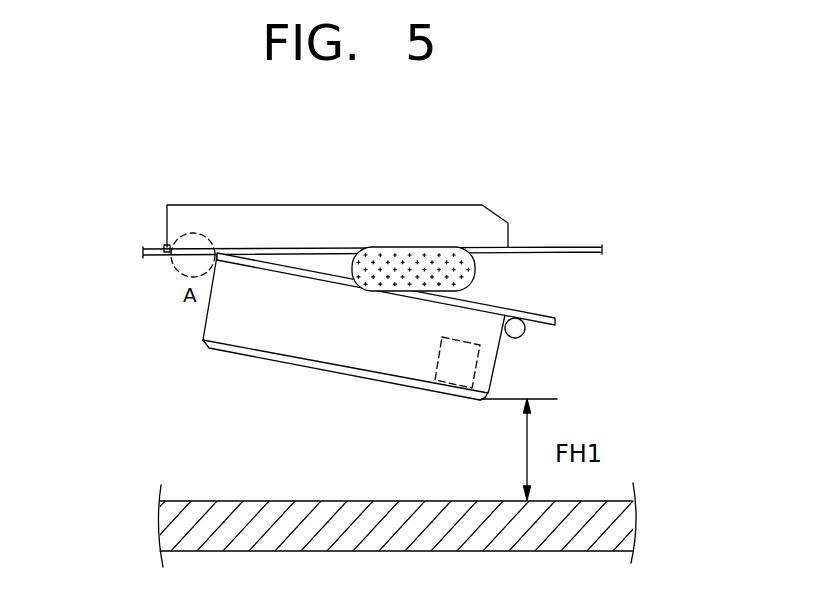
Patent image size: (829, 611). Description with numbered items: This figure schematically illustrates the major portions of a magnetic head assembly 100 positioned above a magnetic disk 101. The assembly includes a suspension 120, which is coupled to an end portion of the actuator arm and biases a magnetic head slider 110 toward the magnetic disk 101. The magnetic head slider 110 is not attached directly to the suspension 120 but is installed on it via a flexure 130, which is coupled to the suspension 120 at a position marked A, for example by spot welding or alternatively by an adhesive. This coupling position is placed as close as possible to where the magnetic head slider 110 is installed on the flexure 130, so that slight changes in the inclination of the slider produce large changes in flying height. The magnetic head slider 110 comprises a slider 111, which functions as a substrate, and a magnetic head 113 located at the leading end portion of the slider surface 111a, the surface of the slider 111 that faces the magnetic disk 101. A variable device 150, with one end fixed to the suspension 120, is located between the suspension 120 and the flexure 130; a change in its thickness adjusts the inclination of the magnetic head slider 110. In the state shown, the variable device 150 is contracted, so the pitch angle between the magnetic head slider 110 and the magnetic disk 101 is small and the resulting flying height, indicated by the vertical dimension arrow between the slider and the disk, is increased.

The magnetic head assembly 100 is at (381, 186).
The suspension 120 is at (490, 223).
The variable device 150 is at (462, 277).
The flexure 130 is at (557, 322).
The magnetic head 113 is at (483, 368).
The magnetic head slider 110 is at (389, 347).
The slider 111 is at (390, 362).
The slider surface 111a is at (303, 367).
The magnetic disk 101 is at (188, 523).